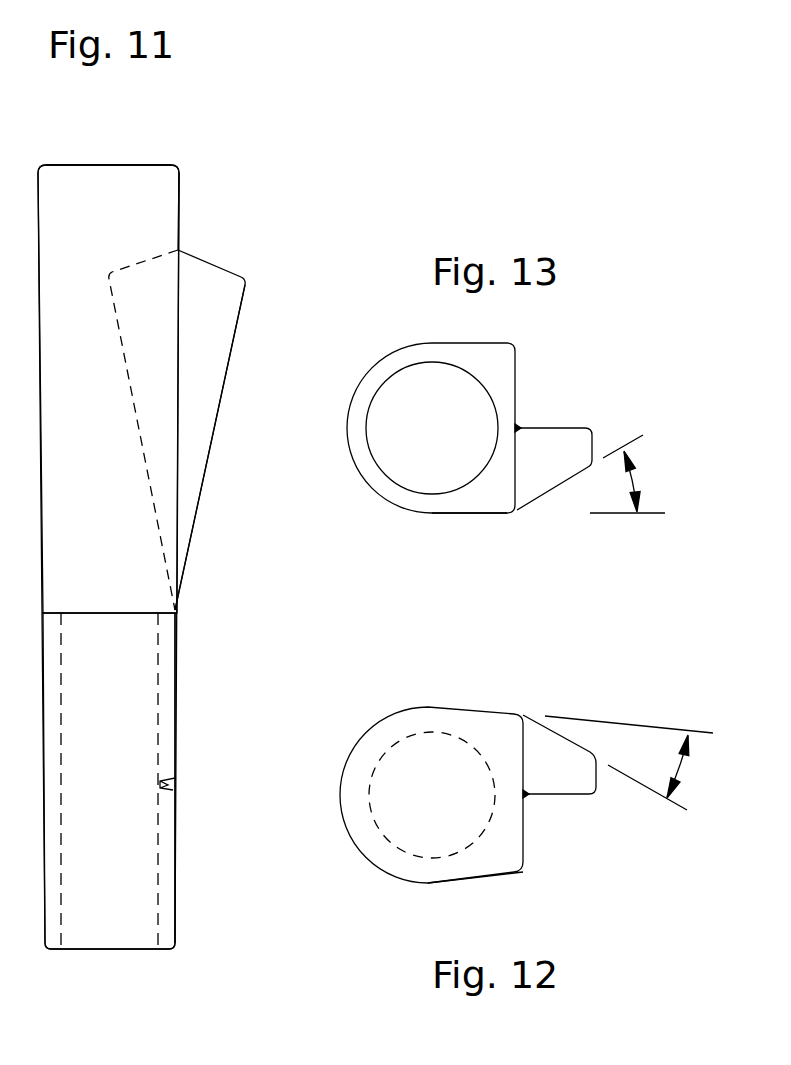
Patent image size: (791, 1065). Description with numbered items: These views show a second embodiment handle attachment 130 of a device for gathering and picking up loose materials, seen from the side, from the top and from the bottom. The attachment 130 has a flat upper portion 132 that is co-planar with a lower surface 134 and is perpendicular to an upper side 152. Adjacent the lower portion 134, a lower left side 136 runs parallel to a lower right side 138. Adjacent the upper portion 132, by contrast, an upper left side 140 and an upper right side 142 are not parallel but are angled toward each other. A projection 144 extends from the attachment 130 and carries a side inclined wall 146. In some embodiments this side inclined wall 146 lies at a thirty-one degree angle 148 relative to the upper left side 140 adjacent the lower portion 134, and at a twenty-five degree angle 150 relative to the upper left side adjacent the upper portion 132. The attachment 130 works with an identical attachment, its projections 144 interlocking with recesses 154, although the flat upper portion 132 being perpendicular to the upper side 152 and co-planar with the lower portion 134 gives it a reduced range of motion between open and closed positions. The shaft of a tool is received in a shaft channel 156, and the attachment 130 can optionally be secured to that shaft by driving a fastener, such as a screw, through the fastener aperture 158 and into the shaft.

In FIG. 11, the handle attachment 130 is at (298, 193).
In FIG. 11, the flat upper portion 132 is at (182, 200).
In FIG. 11, the lower surface 134 is at (175, 715).
In FIG. 11, the lower left side 136 is at (105, 922).
In FIG. 13, the lower left side 136 is at (470, 515).
In FIG. 13, the lower right side 138 is at (465, 343).
In FIG. 11, the upper left side 140 is at (92, 185).
In FIG. 12, the upper left side 140 is at (470, 707).
In FIG. 12, the upper right side 142 is at (468, 878).
In FIG. 11, the projection 144 is at (238, 327).
In FIG. 11, the side inclined wall 146 is at (223, 292).
In FIG. 12, the side inclined wall 146 is at (540, 720).
In FIG. 13, the side inclined wall 146 is at (530, 505).
In FIG. 13, the angle 148 is at (633, 480).
In FIG. 12, the angle 150 is at (678, 767).
In FIG. 11, the upper side 152 is at (128, 163).
In FIG. 11, the recess 154 is at (120, 327).
In FIG. 11, the shaft channel 156 is at (158, 845).
In FIG. 12, the shaft channel 156 is at (375, 820).
In FIG. 13, the shaft channel 156 is at (380, 476).
In FIG. 11, the fastener aperture 158 is at (175, 782).